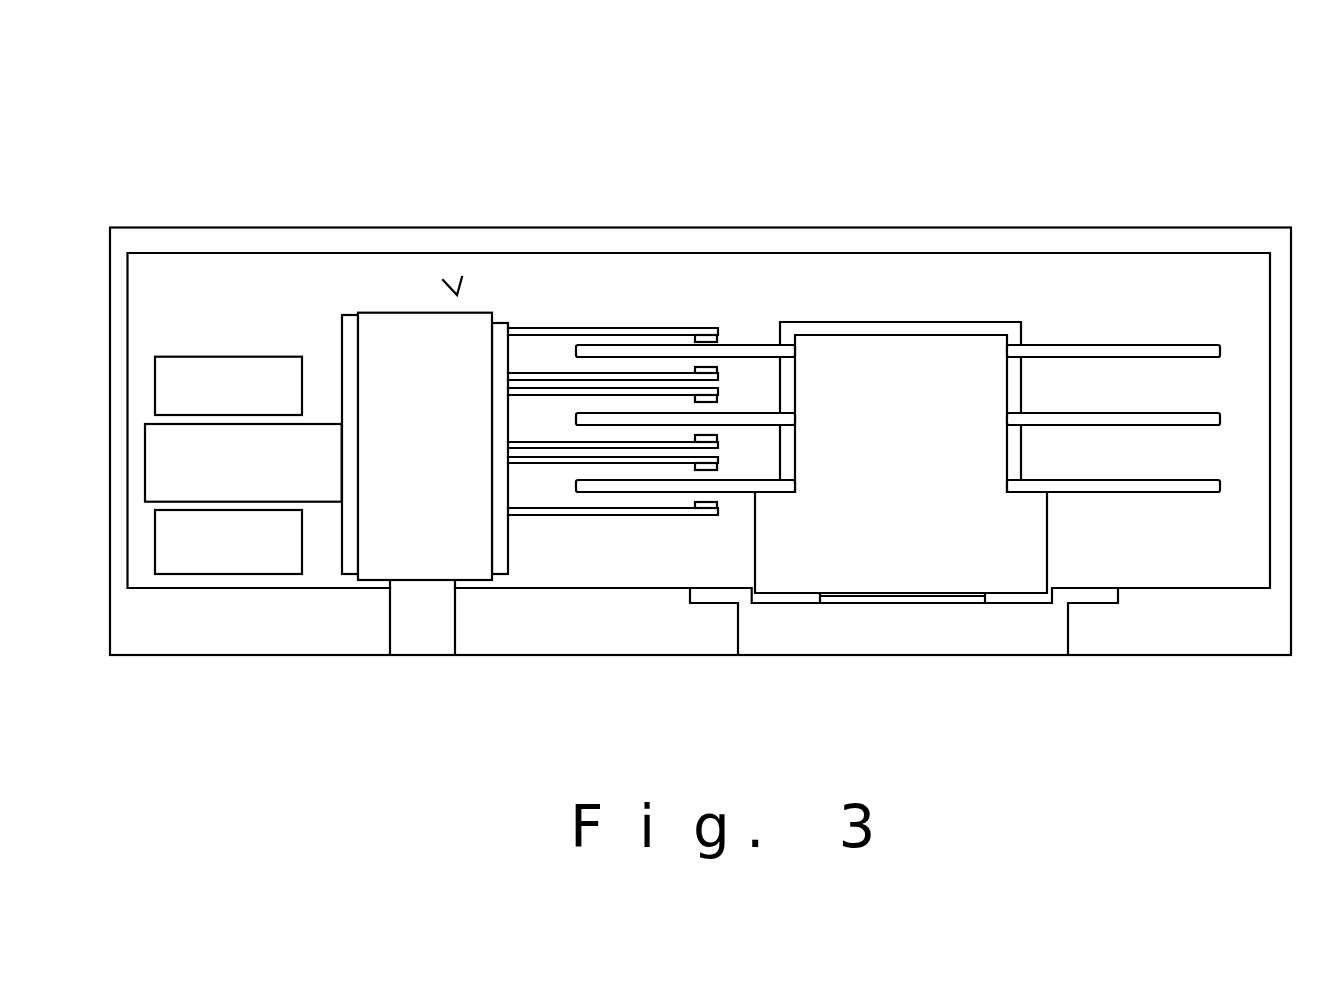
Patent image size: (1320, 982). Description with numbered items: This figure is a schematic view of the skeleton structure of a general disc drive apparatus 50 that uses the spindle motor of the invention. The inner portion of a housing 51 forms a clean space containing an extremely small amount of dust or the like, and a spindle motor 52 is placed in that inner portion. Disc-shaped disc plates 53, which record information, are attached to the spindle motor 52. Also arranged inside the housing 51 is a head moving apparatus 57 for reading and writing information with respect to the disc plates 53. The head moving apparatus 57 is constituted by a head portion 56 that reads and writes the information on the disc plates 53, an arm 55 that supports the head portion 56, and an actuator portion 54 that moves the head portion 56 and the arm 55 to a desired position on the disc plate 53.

The disc drive apparatus 50 is at (787, 45).
The housing 51 is at (1082, 237).
The spindle motor 52 is at (878, 372).
The disc plates 53 is at (1151, 345).
The actuator portion 54 is at (404, 340).
The arm 55 is at (577, 327).
The head portion 56 is at (717, 333).
The head moving apparatus 57 is at (457, 295).